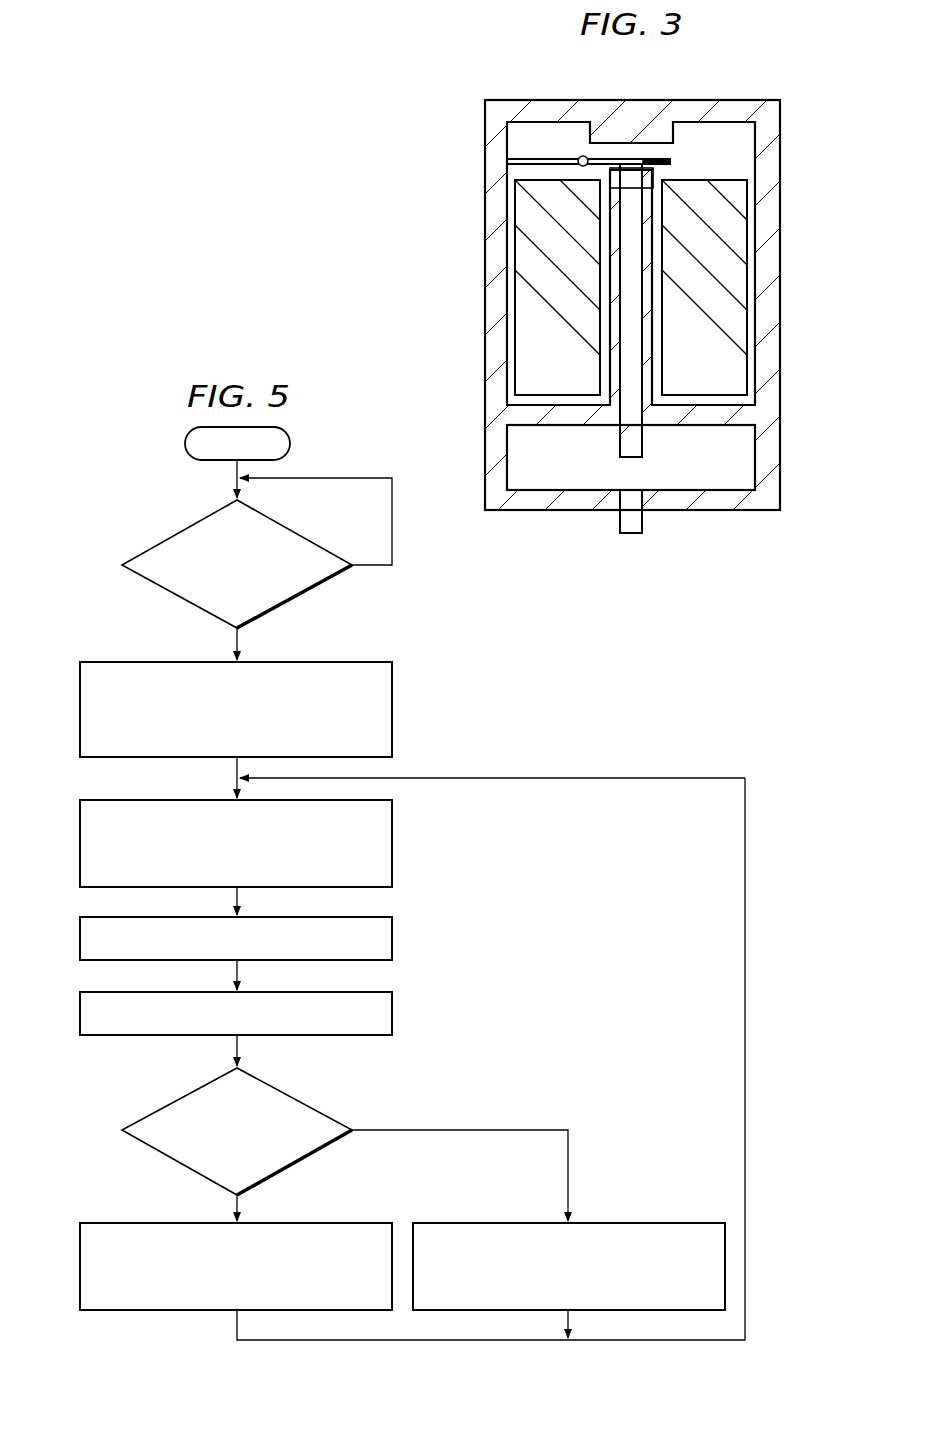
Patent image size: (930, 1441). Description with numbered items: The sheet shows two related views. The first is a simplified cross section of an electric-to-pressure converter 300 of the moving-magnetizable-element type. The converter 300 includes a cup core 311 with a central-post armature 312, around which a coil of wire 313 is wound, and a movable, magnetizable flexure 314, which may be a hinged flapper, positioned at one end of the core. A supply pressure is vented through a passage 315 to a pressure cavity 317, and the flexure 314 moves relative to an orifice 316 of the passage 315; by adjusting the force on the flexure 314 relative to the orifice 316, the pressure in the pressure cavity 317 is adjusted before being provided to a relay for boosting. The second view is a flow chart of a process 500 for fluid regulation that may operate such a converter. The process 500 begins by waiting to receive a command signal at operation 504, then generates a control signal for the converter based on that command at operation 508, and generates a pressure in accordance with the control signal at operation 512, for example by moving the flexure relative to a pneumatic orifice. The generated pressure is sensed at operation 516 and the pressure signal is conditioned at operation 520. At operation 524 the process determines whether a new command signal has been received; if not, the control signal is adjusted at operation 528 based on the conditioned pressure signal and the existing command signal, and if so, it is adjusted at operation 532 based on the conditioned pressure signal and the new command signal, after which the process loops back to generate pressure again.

In FIG. 3, the electric-to-pressure converter 300 is at (745, 60).
In FIG. 3, the cup core 311 is at (782, 334).
In FIG. 3, the central-post armature 312 is at (656, 178).
In FIG. 3, the coil of wire 313 is at (578, 299).
In FIG. 3, the flexure 314 is at (628, 162).
In FIG. 3, the passage 315 is at (619, 450).
In FIG. 3, the orifice 316 is at (640, 186).
In FIG. 3, the pressure cavity 317 is at (723, 472).
In FIG. 5, the process 500 is at (120, 418).
In FIG. 5, the receive command signal operation 504 is at (180, 533).
In FIG. 5, the generate control signal operation 508 is at (80, 712).
In FIG. 5, the generate pressure operation 512 is at (80, 842).
In FIG. 5, the sense generated pressure operation 516 is at (80, 938).
In FIG. 5, the condition pressure signal operation 520 is at (80, 1013).
In FIG. 5, the new command signal decision 524 is at (180, 1166).
In FIG. 5, the adjust control signal operation 528 is at (80, 1268).
In FIG. 5, the adjust control signal with new command operation 532 is at (641, 1223).